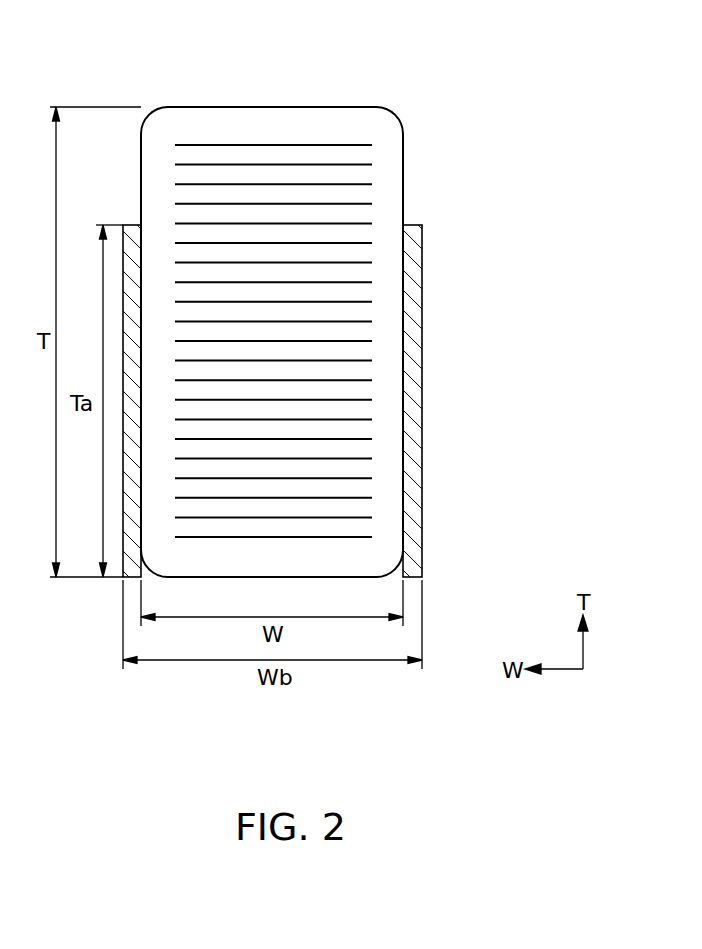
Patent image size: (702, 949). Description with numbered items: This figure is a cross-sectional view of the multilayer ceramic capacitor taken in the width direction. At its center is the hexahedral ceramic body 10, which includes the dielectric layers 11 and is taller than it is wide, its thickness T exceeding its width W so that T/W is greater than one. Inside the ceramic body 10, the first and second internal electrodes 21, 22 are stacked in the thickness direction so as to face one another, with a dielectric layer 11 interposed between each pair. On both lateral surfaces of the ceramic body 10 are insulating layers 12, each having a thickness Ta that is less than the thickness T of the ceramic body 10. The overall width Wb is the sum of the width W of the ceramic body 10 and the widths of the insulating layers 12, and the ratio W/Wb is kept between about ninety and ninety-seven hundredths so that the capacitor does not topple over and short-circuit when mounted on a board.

The ceramic body 10 is at (314, 293).
The dielectric layer 11 is at (388, 343).
The insulating layer 12 is at (414, 398).
The first internal electrode 21 is at (370, 473).
The second internal electrode 22 is at (366, 497).